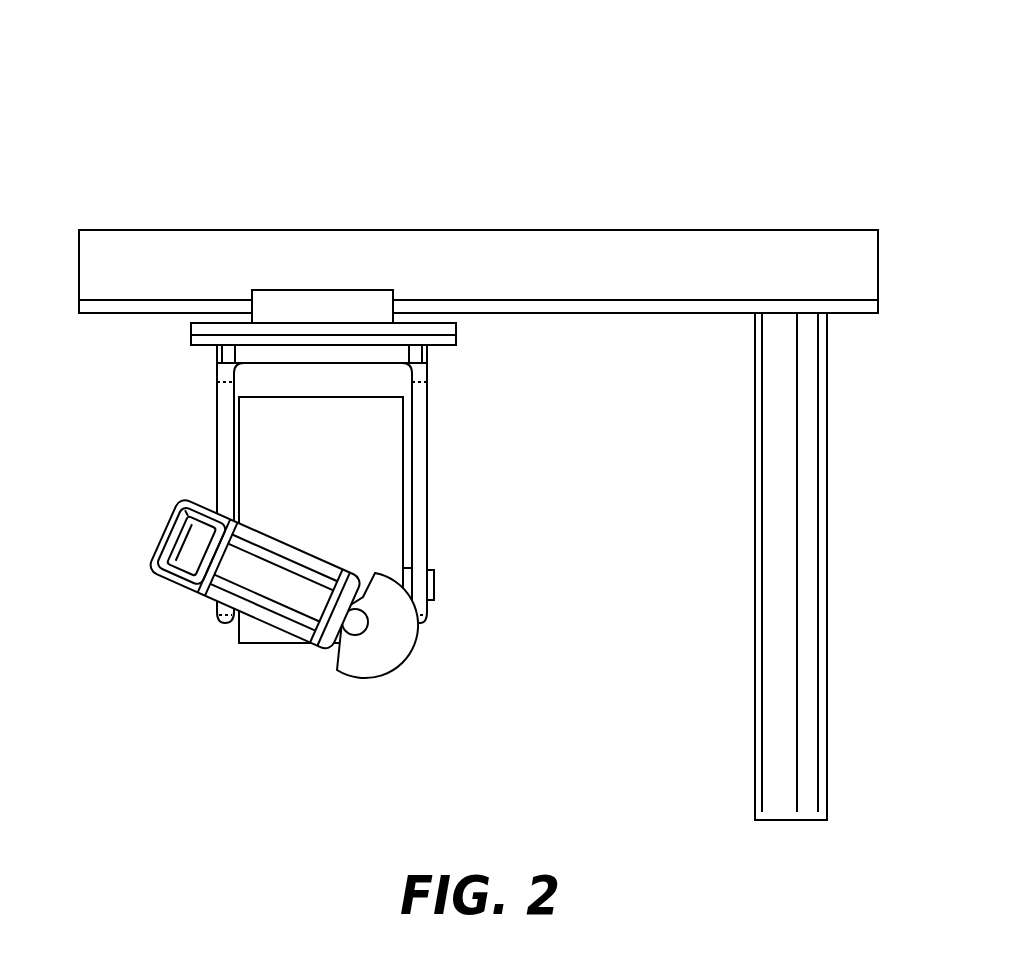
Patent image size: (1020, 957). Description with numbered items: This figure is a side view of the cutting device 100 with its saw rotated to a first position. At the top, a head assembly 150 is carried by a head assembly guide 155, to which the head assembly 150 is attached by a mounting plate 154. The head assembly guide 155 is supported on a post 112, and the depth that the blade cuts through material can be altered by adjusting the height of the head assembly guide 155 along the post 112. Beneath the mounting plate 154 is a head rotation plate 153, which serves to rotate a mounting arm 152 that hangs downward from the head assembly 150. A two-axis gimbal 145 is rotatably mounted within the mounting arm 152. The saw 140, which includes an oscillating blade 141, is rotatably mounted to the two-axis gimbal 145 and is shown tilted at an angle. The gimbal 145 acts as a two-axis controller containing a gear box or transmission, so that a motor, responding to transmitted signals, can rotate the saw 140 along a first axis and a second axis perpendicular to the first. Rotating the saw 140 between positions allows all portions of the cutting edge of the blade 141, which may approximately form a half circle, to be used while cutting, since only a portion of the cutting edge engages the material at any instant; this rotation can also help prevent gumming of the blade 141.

The cutting device 100 is at (194, 84).
The post 112 is at (808, 454).
The saw 140 is at (277, 598).
The oscillating blade 141 is at (380, 648).
The two-axis gimbal 145 is at (383, 495).
The head assembly 150 is at (122, 339).
The mounting arm 152 is at (226, 450).
The head rotation plate 153 is at (197, 333).
The mounting plate 154 is at (275, 303).
The head assembly guide 155 is at (452, 243).